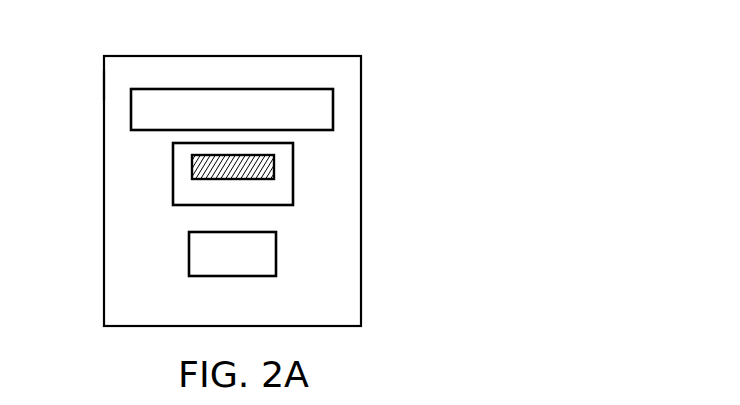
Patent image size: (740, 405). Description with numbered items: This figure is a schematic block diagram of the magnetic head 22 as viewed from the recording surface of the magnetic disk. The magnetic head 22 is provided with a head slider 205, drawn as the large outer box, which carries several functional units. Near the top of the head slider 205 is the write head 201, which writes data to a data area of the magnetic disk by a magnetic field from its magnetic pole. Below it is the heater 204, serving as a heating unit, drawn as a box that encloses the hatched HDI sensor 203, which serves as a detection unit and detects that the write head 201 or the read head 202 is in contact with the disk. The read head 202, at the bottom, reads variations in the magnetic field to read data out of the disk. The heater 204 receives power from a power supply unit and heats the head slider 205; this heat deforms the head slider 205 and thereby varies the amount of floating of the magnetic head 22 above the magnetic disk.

The magnetic head 22 is at (440, 61).
The write head 201 is at (333, 101).
The read head 202 is at (276, 253).
The HDI sensor 203 is at (274, 160).
The heater 204 is at (293, 192).
The head slider 205 is at (104, 83).